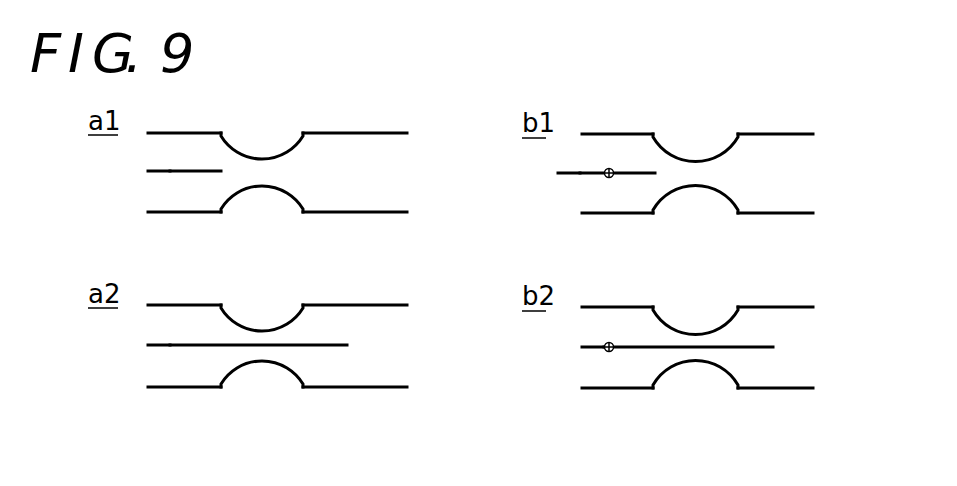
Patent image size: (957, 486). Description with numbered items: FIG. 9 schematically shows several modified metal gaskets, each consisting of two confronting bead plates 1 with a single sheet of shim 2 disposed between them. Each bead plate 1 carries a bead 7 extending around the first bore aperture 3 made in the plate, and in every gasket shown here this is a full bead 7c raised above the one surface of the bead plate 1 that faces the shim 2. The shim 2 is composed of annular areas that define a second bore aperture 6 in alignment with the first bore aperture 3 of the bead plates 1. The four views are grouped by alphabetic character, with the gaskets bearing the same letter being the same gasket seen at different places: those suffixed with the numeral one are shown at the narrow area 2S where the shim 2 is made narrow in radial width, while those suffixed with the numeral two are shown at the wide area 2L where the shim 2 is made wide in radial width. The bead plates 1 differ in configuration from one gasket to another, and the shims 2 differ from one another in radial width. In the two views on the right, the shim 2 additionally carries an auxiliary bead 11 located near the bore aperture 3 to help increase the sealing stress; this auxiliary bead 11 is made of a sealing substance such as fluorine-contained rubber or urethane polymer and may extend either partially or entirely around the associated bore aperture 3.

The bead plate 1 is at (790, 388).
The first bore aperture 3 is at (582, 388).
The bead 7 is at (503, 272).
The full bead 7c is at (698, 362).
The shim 2 is at (484, 270).
The narrow shim area 2S is at (631, 238).
The wide shim area 2L is at (755, 345).
The second bore aperture 6 is at (582, 347).
The auxiliary bead 11 is at (605, 352).